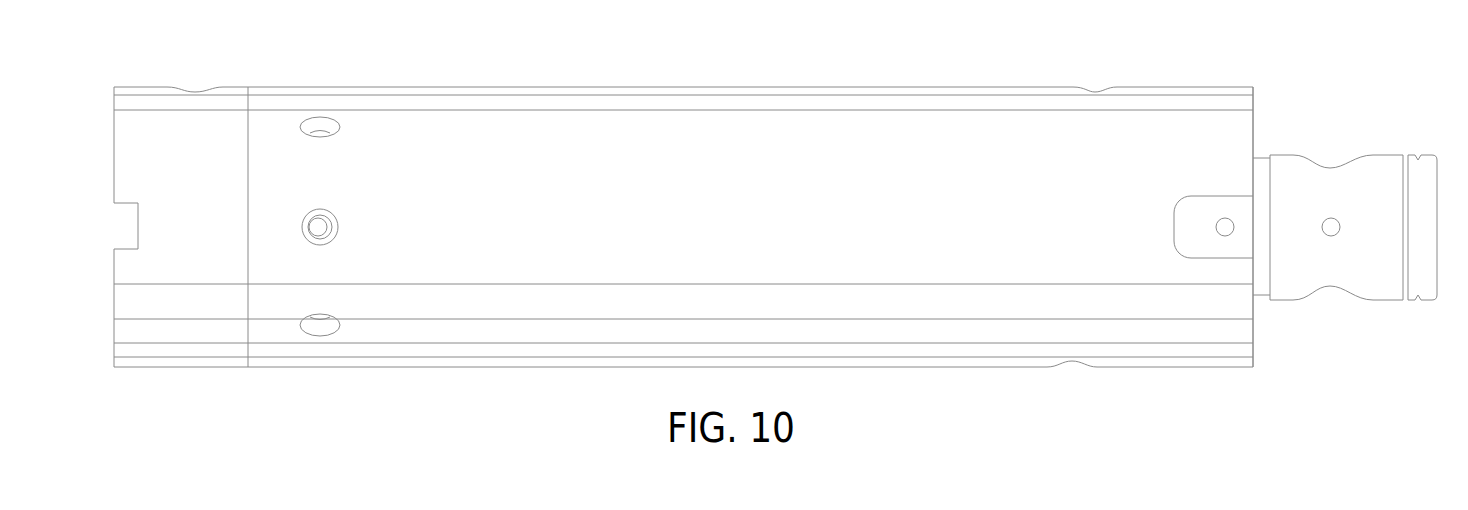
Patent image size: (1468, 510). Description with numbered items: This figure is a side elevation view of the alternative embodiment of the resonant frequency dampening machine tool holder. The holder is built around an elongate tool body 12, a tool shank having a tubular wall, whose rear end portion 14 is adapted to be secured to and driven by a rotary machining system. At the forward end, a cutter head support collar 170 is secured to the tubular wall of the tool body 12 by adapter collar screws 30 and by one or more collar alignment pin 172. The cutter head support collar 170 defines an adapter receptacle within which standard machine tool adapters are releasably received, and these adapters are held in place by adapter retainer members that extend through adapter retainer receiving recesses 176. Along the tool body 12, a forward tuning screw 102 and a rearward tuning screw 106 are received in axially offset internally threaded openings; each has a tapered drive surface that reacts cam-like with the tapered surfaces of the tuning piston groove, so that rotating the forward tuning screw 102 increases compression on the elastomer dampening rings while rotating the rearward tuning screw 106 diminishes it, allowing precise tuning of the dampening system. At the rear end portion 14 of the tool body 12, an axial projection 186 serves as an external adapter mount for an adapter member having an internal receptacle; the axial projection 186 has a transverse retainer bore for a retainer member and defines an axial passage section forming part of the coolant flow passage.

The tool body 12 is at (1178, 110).
The rear end portion 14 is at (1242, 87).
The adapter collar screws 30 is at (323, 226).
The forward tuning screw 102 is at (1093, 92).
The rearward tuning screw 106 is at (1070, 363).
The cutter head support collar 170 is at (236, 88).
The collar alignment pin 172 is at (320, 127).
The adapter retainer receiving recesses 176 is at (180, 90).
The axial projection 186 is at (1387, 155).